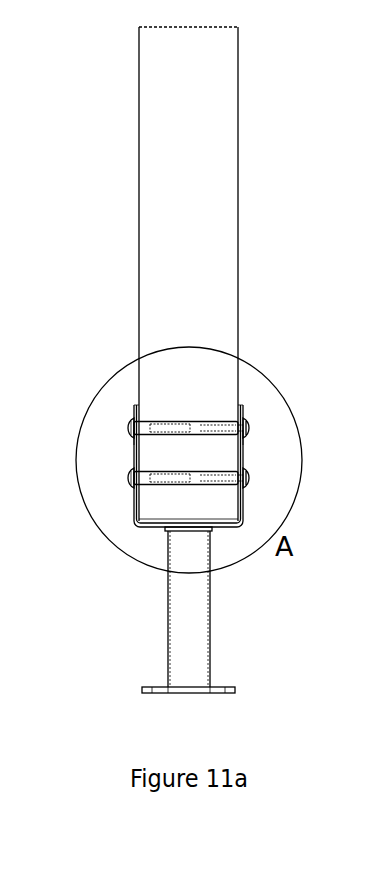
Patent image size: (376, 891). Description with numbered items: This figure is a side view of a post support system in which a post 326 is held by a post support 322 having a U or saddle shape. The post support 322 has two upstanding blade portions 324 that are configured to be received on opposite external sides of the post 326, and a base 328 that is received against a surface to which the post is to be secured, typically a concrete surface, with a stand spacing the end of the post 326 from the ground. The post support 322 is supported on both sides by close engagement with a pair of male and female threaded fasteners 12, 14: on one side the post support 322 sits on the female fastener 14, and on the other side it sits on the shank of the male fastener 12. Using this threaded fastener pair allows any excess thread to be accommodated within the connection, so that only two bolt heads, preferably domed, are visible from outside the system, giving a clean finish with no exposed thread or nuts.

The post 326 is at (237, 170).
The blade portions 324 is at (132, 513).
The male threaded fastener 12 is at (130, 477).
The female threaded fastener 14 is at (250, 478).
The post support 322 is at (207, 660).
The base 328 is at (142, 689).